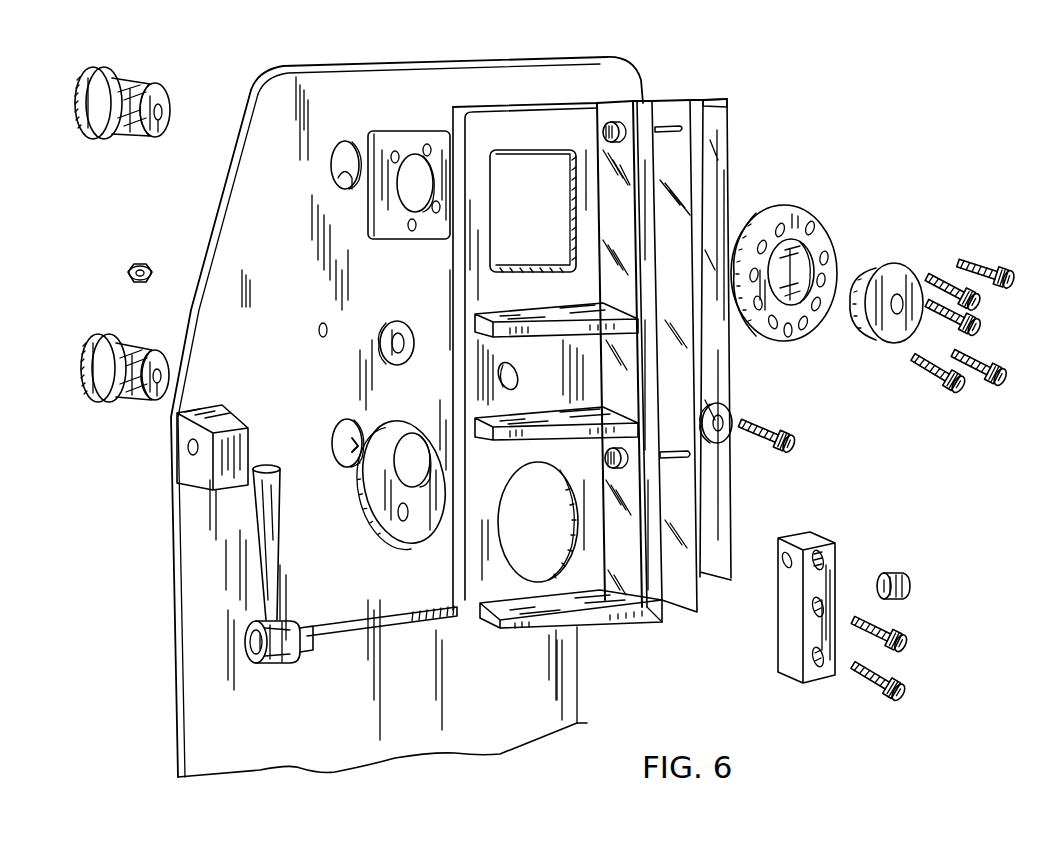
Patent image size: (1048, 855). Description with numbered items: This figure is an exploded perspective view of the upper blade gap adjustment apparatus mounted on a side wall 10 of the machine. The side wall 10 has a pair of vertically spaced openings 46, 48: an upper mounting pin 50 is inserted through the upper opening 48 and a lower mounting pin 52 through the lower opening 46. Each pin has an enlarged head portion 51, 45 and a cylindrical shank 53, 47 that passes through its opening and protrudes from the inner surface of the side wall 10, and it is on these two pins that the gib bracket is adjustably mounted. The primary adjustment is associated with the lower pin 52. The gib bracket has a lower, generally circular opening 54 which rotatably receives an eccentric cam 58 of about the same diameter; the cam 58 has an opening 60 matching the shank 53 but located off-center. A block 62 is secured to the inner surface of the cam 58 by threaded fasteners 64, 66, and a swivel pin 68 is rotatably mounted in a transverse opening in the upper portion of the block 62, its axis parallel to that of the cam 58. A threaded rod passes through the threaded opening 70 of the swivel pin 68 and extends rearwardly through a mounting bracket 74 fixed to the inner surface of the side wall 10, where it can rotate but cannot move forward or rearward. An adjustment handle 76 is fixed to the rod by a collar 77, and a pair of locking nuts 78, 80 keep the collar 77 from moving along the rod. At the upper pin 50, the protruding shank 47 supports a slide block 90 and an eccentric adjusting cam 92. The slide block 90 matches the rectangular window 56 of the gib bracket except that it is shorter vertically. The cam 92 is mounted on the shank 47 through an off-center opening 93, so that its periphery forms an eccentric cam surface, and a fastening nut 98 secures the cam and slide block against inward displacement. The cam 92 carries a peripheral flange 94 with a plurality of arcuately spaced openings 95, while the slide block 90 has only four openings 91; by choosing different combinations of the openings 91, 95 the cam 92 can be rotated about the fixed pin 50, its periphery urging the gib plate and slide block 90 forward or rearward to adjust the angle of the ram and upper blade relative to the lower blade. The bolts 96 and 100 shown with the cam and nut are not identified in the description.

The side wall 10 is at (473, 692).
The enlarged head portion 45 is at (90, 115).
The opening 46 is at (360, 443).
The cylindrical shank 47 is at (140, 88).
The opening 48 is at (334, 172).
The upper mounting pin 50 is at (82, 75).
The enlarged head portion 51 is at (100, 393).
The lower mounting pin 52 is at (87, 342).
The cylindrical shank 53 is at (147, 350).
The lower circular opening 54 is at (568, 528).
The rectangular opening or window 56 is at (570, 202).
The eccentric cam 58 is at (380, 540).
The opening 60 is at (408, 436).
The block 62 is at (790, 640).
The threaded fastener 64 is at (910, 633).
The threaded fastener 66 is at (915, 688).
The swivel pin 68 is at (912, 583).
The threaded opening 70 is at (190, 448).
The mounting bracket 74 is at (206, 413).
The adjustment handle 76 is at (262, 535).
The collar 77 is at (276, 670).
The locking nut 78 is at (323, 592).
The locking nut 80 is at (250, 627).
The slide block 90 is at (402, 204).
The openings 91 is at (391, 155).
The eccentric adjusting cam 92 is at (785, 210).
The opening 93 is at (803, 268).
The peripheral flange 94 is at (806, 226).
The arcuately spaced openings 95 is at (787, 338).
The bolts 96 is at (1006, 278).
The fastening nut 98 is at (902, 268).
The bolt 100 is at (983, 327).